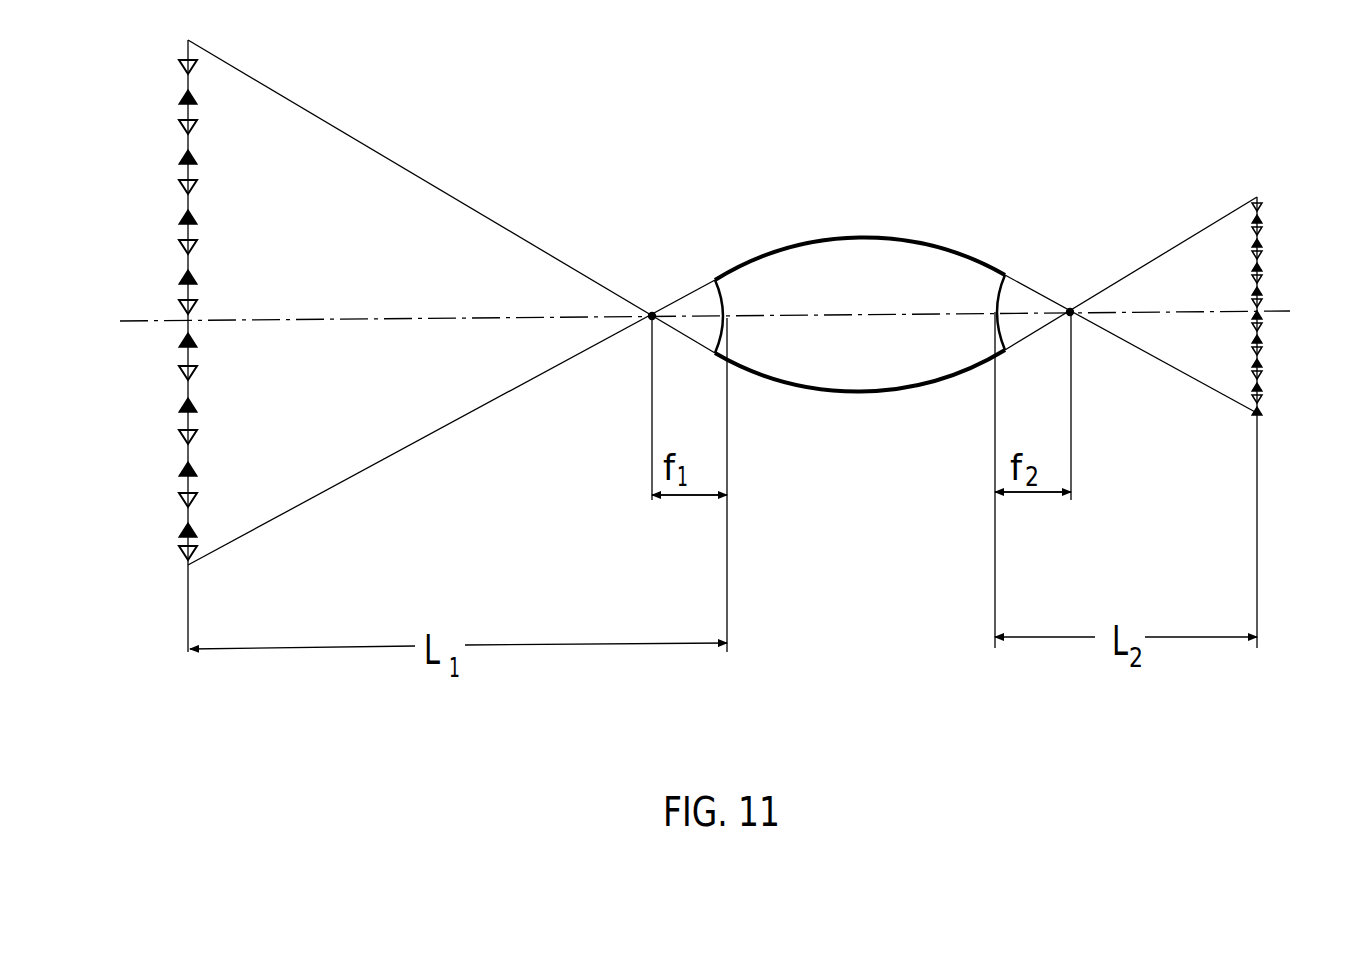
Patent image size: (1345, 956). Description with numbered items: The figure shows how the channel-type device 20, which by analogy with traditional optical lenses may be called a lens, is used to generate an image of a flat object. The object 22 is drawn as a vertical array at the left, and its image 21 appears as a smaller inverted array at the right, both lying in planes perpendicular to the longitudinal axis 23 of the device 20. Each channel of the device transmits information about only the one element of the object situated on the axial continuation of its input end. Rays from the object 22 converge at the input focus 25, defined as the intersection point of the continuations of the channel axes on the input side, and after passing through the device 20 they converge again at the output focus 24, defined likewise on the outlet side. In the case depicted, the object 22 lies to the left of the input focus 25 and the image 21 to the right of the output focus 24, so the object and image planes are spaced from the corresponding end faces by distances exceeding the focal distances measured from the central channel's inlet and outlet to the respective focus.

The device 20 is at (828, 265).
The image 21 is at (1275, 255).
The object 22 is at (172, 267).
The longitudinal axis 23 is at (885, 313).
The output focus 24 is at (1070, 312).
The input focus 25 is at (652, 316).